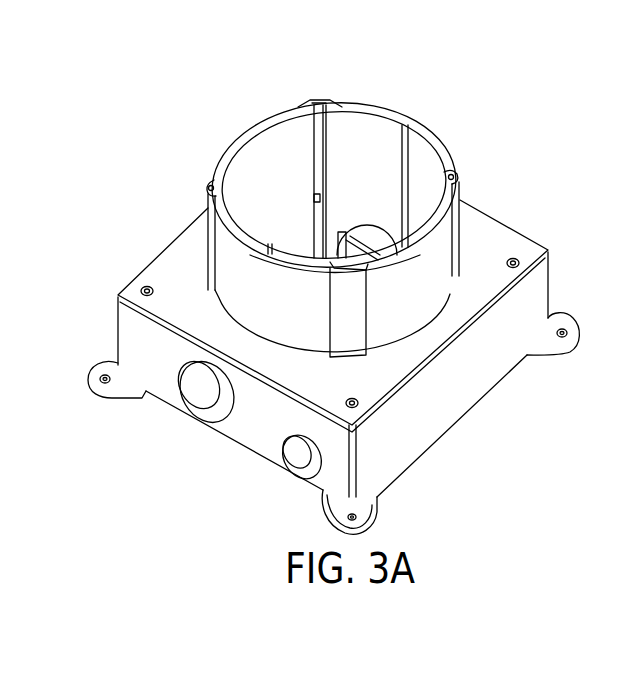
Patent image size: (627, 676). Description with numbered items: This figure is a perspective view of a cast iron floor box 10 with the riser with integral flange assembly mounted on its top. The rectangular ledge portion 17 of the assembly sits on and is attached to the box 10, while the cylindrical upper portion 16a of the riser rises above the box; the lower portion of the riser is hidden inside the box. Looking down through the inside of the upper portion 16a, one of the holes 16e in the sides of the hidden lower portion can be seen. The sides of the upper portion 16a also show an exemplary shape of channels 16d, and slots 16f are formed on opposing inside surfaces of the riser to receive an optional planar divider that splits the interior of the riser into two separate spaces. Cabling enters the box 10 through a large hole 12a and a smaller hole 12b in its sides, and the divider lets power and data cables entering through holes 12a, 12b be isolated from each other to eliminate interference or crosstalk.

The floor box 10 is at (541, 302).
The large hole 12a is at (200, 385).
The smaller hole 12b is at (300, 455).
The cylindrical upper portion 16a is at (450, 213).
The channels 16d is at (322, 101).
The holes 16e is at (360, 235).
The slots 16f is at (405, 125).
The rectangular ledge portion 17 is at (511, 252).